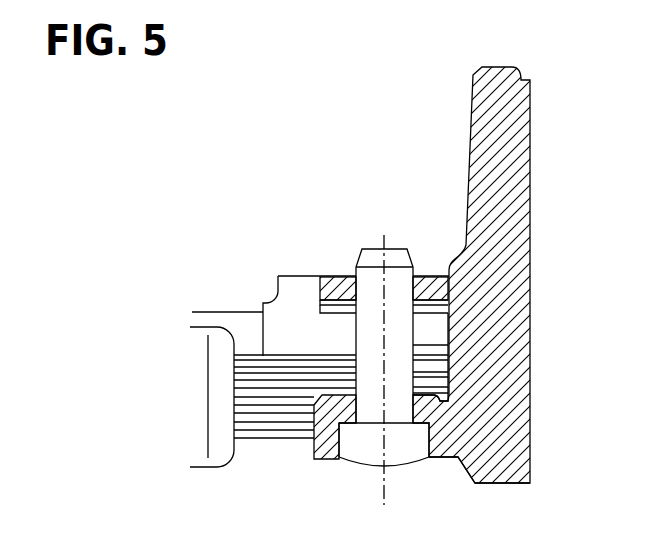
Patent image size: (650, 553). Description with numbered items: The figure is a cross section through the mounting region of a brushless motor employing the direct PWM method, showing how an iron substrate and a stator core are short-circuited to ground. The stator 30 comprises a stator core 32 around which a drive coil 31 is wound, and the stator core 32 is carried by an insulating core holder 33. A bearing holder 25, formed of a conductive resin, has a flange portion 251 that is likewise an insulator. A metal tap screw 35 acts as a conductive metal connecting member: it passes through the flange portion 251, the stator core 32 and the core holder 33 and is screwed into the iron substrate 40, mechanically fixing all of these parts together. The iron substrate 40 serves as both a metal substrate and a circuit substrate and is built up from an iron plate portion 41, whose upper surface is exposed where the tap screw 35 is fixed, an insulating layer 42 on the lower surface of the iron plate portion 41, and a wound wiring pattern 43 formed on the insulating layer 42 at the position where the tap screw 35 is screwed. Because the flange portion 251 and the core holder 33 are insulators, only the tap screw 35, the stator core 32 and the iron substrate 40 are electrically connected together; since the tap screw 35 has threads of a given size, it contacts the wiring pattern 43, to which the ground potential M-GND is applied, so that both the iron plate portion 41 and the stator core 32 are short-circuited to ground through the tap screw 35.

The bearing holder 25 is at (527, 107).
The flange portion 251 is at (325, 460).
The stator 30 is at (247, 417).
The drive coil 31 is at (200, 440).
The stator core 32 is at (260, 432).
The core holder 33 is at (298, 275).
The metal tap screw 35 is at (405, 453).
The iron substrate 40 is at (379, 220).
The iron plate portion 41 is at (446, 292).
The insulating layer 42 is at (438, 292).
The wiring pattern 43 is at (427, 292).